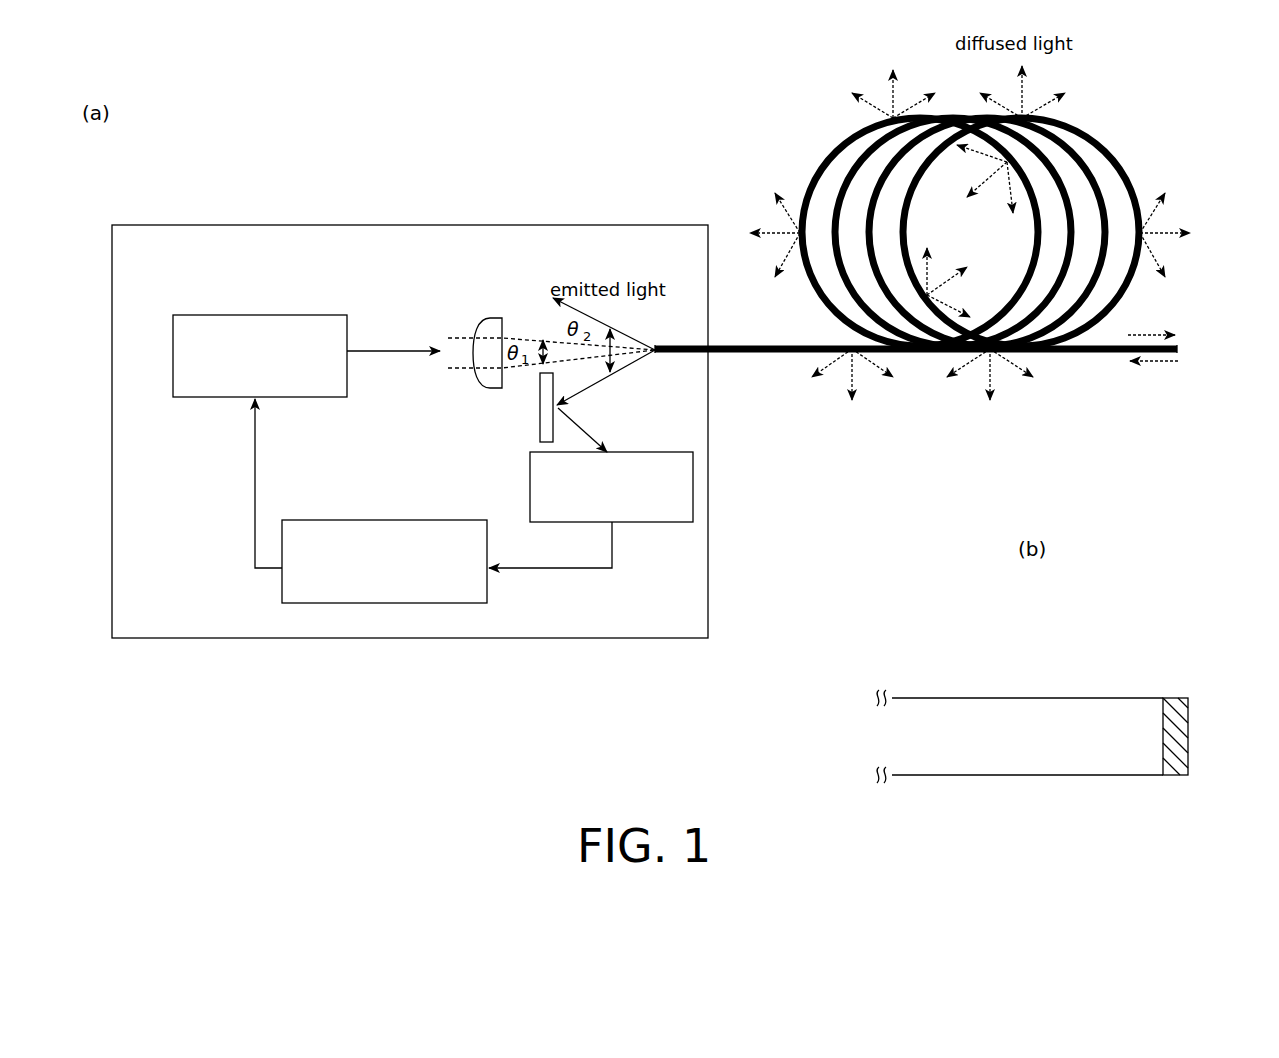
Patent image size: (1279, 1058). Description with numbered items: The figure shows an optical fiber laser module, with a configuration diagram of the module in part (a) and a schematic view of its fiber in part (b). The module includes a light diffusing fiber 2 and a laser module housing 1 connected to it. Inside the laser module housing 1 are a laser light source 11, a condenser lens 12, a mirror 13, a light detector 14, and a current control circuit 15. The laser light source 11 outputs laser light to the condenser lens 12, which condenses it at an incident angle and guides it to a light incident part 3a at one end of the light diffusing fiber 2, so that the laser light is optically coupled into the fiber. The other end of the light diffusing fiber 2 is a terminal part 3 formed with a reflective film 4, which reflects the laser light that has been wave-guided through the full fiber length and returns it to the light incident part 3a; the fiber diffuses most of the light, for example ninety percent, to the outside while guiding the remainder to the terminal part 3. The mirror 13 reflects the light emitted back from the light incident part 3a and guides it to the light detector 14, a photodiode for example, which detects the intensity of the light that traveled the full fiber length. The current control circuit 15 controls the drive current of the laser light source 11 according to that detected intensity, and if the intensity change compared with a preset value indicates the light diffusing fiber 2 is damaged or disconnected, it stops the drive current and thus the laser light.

The laser module housing 1 is at (232, 225).
The light diffusing fiber 2 is at (822, 161).
The terminal part 3 is at (1180, 343).
The light incident part 3a is at (654, 353).
The reflective film 4 is at (1190, 722).
The laser light source 11 is at (305, 315).
The condenser lens 12 is at (495, 318).
The mirror 13 is at (540, 437).
The light detector 14 is at (660, 522).
The current control circuit 15 is at (405, 520).